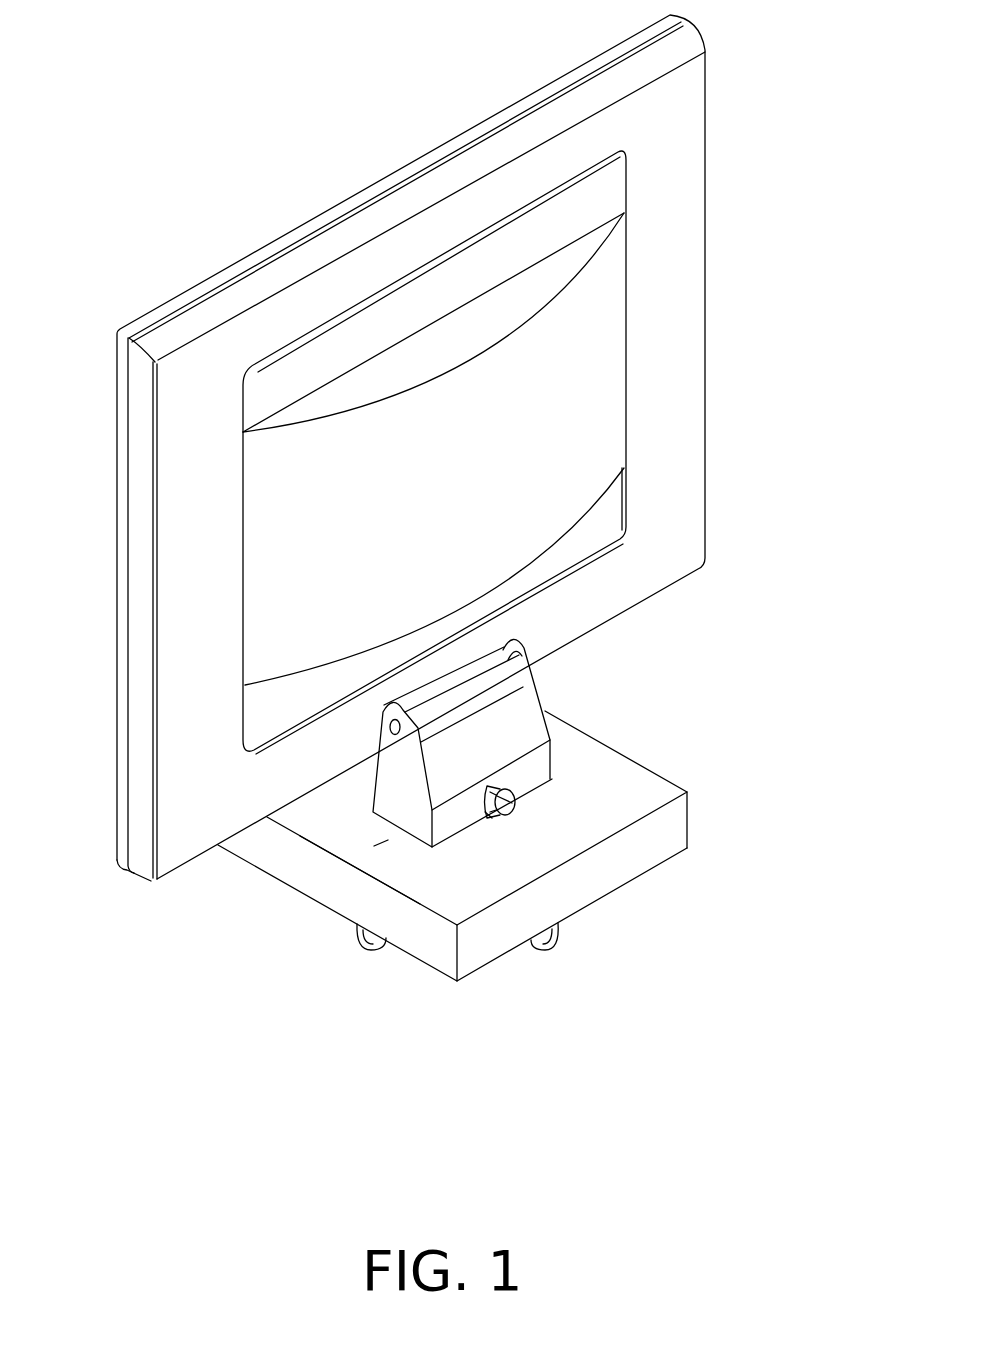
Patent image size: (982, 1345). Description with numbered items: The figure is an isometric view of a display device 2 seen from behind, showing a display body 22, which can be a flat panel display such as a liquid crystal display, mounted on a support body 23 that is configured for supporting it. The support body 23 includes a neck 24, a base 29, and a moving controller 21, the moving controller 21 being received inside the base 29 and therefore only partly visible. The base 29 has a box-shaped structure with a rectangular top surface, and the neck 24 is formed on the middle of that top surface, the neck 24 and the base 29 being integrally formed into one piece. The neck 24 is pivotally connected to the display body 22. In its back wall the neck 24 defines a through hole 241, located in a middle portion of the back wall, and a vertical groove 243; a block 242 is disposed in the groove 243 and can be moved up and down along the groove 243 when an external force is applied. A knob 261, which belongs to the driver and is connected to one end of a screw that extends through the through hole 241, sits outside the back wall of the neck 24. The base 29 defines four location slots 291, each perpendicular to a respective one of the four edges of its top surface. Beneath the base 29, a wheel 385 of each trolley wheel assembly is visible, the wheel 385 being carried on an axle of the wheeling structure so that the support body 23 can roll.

The display device 2 is at (362, 31).
The moving controller 21 is at (368, 958).
The display body 22 is at (247, 240).
The support body 23 is at (486, 851).
The neck 24 is at (578, 835).
The through hole 241 is at (487, 818).
The block 242 is at (513, 790).
The groove 243 is at (488, 784).
The knob 261 is at (515, 803).
The base 29 is at (327, 885).
The location slot 291 is at (543, 839).
The wheel 385 is at (549, 950).